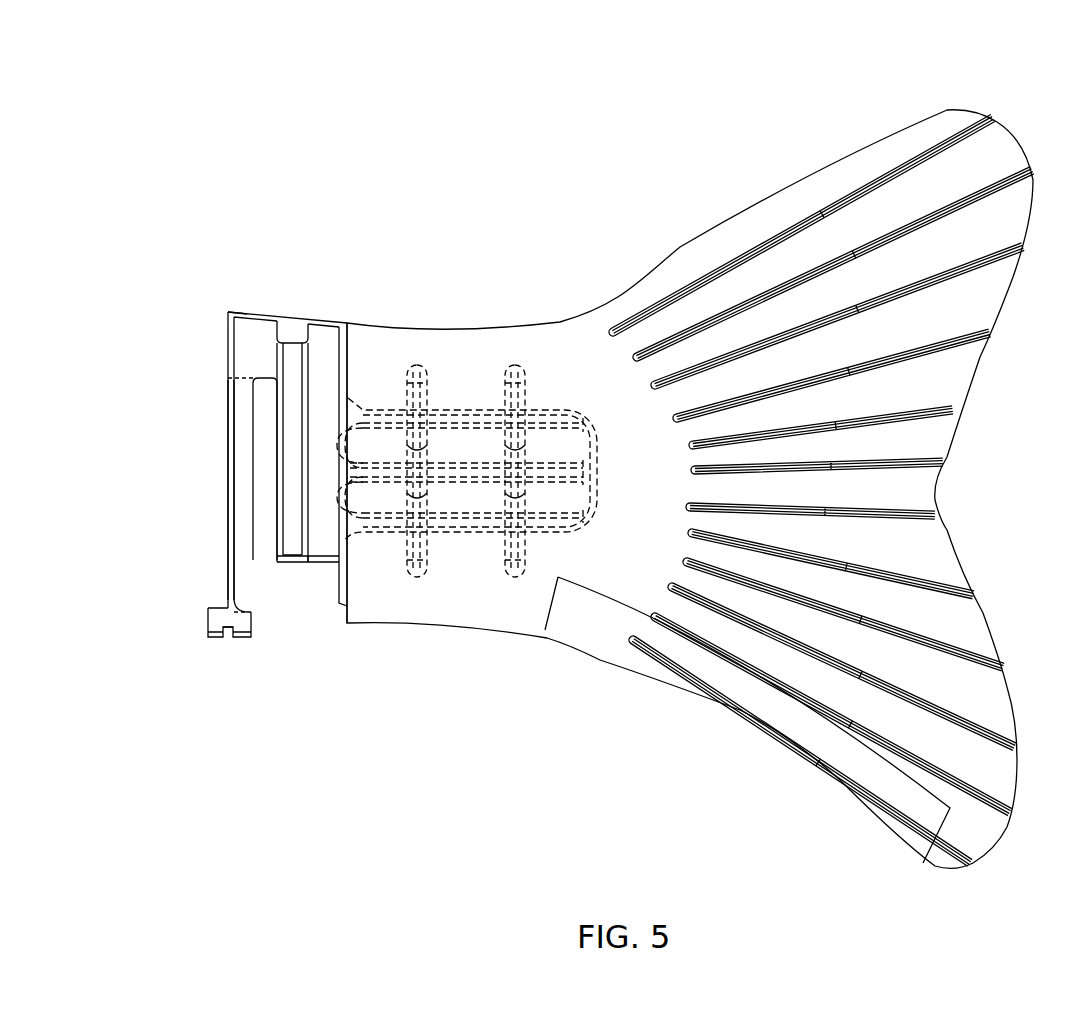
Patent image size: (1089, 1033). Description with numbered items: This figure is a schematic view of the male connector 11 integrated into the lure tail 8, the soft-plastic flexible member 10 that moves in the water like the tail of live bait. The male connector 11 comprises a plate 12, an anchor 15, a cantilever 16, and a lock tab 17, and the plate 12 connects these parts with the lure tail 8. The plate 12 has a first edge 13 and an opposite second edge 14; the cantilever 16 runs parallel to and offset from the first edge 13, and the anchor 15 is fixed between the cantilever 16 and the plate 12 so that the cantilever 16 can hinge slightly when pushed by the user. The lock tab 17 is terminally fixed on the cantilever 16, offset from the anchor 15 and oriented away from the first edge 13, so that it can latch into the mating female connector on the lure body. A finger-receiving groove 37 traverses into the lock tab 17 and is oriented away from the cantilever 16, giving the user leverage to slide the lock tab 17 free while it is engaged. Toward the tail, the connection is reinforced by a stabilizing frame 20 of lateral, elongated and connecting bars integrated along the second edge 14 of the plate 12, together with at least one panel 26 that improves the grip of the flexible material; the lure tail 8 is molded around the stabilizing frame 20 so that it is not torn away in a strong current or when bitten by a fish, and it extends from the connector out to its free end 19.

The lure tail 8 is at (758, 170).
The shield body 10 is at (379, 310).
The male connector 11 is at (250, 280).
The plate 12 is at (329, 310).
The first edge 13 is at (322, 318).
The second edge 14 is at (318, 560).
The anchor 15 is at (228, 312).
The cantilever 16 is at (230, 450).
The lock tab 17 is at (217, 613).
The free end 19 is at (272, 565).
The internal conduit assembly 20 is at (596, 521).
The panel 26 is at (515, 357).
The finger-receiving groove 37 is at (230, 633).